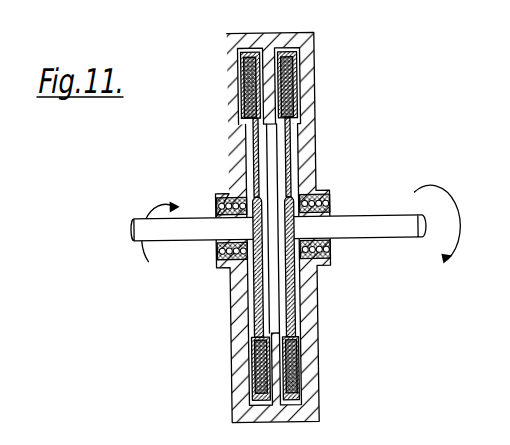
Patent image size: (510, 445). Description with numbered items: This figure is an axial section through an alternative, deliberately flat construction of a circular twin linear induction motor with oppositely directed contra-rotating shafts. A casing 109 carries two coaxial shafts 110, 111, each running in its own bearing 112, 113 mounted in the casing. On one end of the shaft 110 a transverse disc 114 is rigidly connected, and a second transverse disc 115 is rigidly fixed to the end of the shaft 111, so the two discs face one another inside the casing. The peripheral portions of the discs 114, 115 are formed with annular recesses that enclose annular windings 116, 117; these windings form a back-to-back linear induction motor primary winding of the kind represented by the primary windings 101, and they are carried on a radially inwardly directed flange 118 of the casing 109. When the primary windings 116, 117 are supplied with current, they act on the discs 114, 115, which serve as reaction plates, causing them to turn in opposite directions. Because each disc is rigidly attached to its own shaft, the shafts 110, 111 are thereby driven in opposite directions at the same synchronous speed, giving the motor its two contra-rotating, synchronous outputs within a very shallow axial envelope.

The linear induction motor primary windings 101 is at (300, 367).
The casing 109 is at (232, 365).
The shaft 110 is at (183, 234).
The shaft 111 is at (378, 232).
The bearing 112 is at (216, 200).
The bearing 113 is at (331, 212).
The transverse disc 114 is at (257, 293).
The transverse disc 115 is at (291, 291).
The annular winding 116 is at (251, 97).
The annular winding 117 is at (286, 89).
The radially inwardly directed flange 118 is at (270, 129).